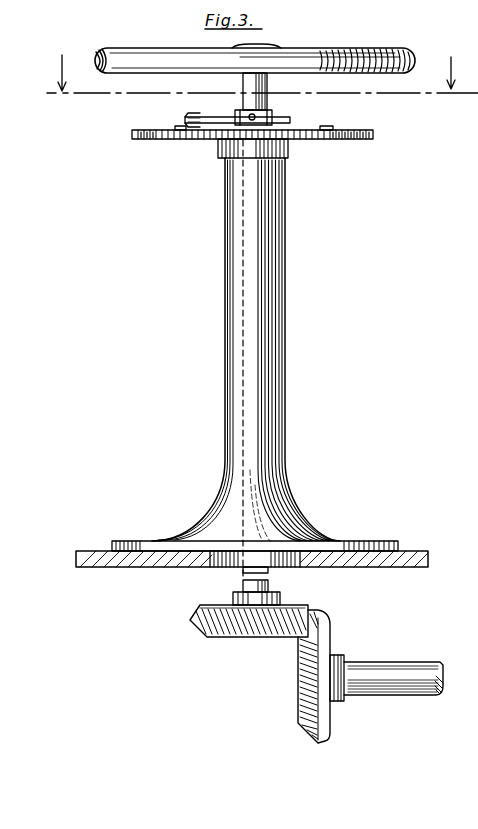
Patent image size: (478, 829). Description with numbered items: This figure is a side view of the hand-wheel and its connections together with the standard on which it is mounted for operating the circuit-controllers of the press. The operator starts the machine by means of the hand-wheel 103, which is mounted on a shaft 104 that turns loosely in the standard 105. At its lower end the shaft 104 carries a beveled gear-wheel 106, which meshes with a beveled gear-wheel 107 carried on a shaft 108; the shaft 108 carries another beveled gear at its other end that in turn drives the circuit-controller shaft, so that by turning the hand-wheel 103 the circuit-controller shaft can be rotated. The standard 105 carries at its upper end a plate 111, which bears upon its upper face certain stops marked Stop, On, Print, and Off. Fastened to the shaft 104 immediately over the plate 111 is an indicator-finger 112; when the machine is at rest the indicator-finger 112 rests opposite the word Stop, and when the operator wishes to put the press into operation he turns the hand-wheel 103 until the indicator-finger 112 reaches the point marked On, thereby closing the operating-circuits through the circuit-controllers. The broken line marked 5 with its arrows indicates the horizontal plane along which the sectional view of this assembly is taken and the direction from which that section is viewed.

The section line 5 is at (252, 78).
The hand-wheel 103 is at (405, 52).
The shaft 104 is at (243, 85).
The standard 105 is at (280, 313).
The beveled gear-wheel 106 is at (207, 638).
The beveled gear-wheel 107 is at (318, 645).
The shaft 108 is at (397, 672).
The plate 111 is at (335, 139).
The indicator-finger 112 is at (190, 118).